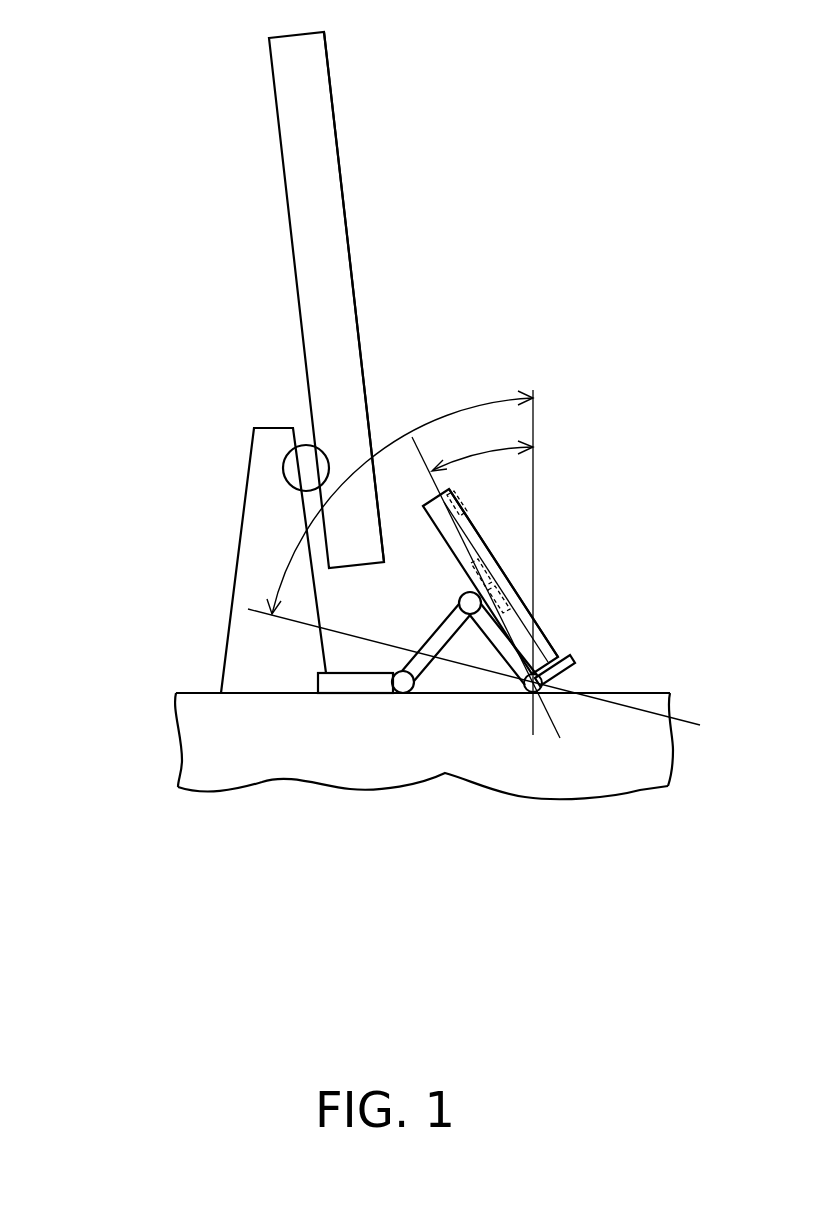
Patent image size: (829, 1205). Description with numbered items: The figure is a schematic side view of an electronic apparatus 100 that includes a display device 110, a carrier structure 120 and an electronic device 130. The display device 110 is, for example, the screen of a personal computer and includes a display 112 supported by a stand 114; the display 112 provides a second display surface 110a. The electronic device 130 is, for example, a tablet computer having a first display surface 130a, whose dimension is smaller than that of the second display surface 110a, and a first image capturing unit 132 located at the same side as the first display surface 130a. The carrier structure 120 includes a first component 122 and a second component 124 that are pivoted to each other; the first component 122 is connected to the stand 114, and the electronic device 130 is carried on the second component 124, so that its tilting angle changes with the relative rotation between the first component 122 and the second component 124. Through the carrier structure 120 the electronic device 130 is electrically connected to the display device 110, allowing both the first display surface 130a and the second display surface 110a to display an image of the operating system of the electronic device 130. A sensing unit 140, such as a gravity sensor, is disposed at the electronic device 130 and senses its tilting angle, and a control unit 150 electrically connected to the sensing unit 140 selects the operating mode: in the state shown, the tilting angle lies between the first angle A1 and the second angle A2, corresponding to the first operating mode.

The electronic apparatus 100 is at (736, 937).
The display device 110 is at (121, 213).
The second display surface 110a is at (346, 88).
The display 112 is at (298, 179).
The stand 114 is at (263, 471).
The carrier structure 120 is at (371, 665).
The first component 122 is at (420, 665).
The second component 124 is at (495, 640).
The electronic device 130 is at (537, 642).
The first display surface 130a is at (497, 544).
The first image capturing unit 132 is at (465, 501).
The sensing unit 140 is at (503, 600).
The control unit 150 is at (497, 563).
The first angle A1 is at (480, 444).
The second angle A2 is at (489, 397).